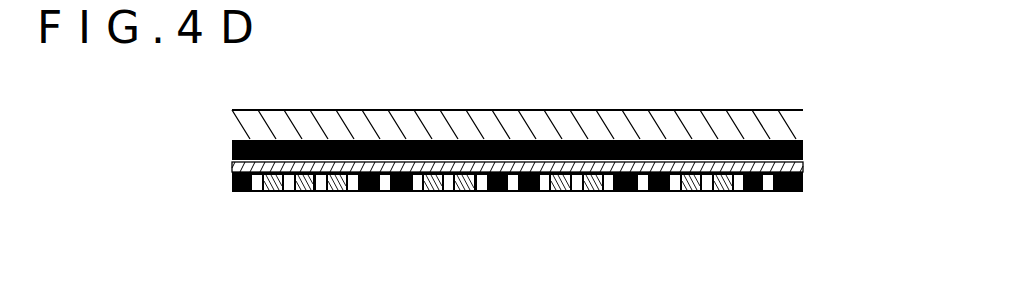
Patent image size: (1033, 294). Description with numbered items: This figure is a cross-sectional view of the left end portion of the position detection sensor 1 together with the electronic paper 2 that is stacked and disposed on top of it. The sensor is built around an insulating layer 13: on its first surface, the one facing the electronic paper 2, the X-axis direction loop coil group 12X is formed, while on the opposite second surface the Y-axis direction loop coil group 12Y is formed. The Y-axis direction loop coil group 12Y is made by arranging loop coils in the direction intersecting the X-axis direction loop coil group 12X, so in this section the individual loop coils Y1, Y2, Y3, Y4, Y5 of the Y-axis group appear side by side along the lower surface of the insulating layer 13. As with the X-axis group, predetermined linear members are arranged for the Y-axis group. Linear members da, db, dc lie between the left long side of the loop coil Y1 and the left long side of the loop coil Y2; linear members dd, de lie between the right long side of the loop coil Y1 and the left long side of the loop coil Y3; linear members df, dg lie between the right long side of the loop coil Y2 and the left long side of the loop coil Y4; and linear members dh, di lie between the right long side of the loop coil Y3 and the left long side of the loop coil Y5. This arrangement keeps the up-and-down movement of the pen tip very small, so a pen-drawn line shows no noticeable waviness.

The position detection sensor 1 is at (228, 139).
The electronic paper 2 is at (235, 124).
The X-axis direction loop coil group 12X is at (804, 152).
The insulating layer 13 is at (803, 165).
The Y-axis direction loop coil group 12Y is at (551, 227).
The loop coil Y1 is at (242, 193).
The loop coil Y2 is at (367, 193).
The loop coil Y3 is at (495, 193).
The loop coil Y4 is at (622, 193).
The loop coil Y5 is at (752, 193).
The linear member da is at (270, 193).
The linear member db is at (302, 193).
The linear member dc is at (335, 193).
The linear member dd is at (432, 193).
The linear member de is at (463, 193).
The linear member df is at (558, 193).
The linear member dg is at (590, 193).
The linear member dh is at (687, 193).
The linear member di is at (720, 193).